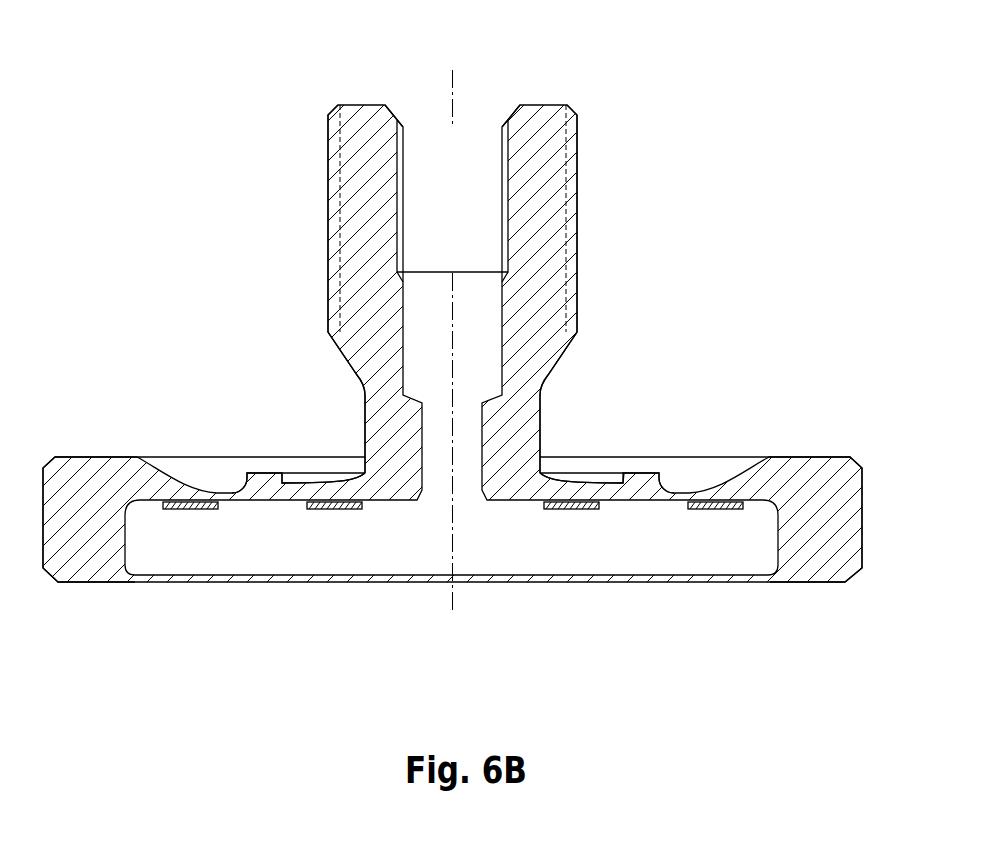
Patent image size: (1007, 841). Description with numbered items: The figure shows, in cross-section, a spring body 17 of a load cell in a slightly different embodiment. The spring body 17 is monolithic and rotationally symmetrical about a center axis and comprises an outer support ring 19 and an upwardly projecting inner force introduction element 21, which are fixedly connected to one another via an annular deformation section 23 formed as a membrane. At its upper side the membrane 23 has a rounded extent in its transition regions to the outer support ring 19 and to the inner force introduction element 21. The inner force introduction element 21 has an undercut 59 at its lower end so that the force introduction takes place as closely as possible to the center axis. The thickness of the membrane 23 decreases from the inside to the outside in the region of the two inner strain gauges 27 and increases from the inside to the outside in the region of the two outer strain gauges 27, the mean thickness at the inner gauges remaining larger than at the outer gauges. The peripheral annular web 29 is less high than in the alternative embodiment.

The spring body 17 is at (720, 124).
The outer support ring 19 is at (69, 476).
The inner force introduction element 21 is at (358, 143).
The annular deformation section 23 is at (722, 488).
The strain gauges 27 is at (183, 512).
The peripheral annular web 29 is at (263, 474).
The undercut 59 is at (573, 382).